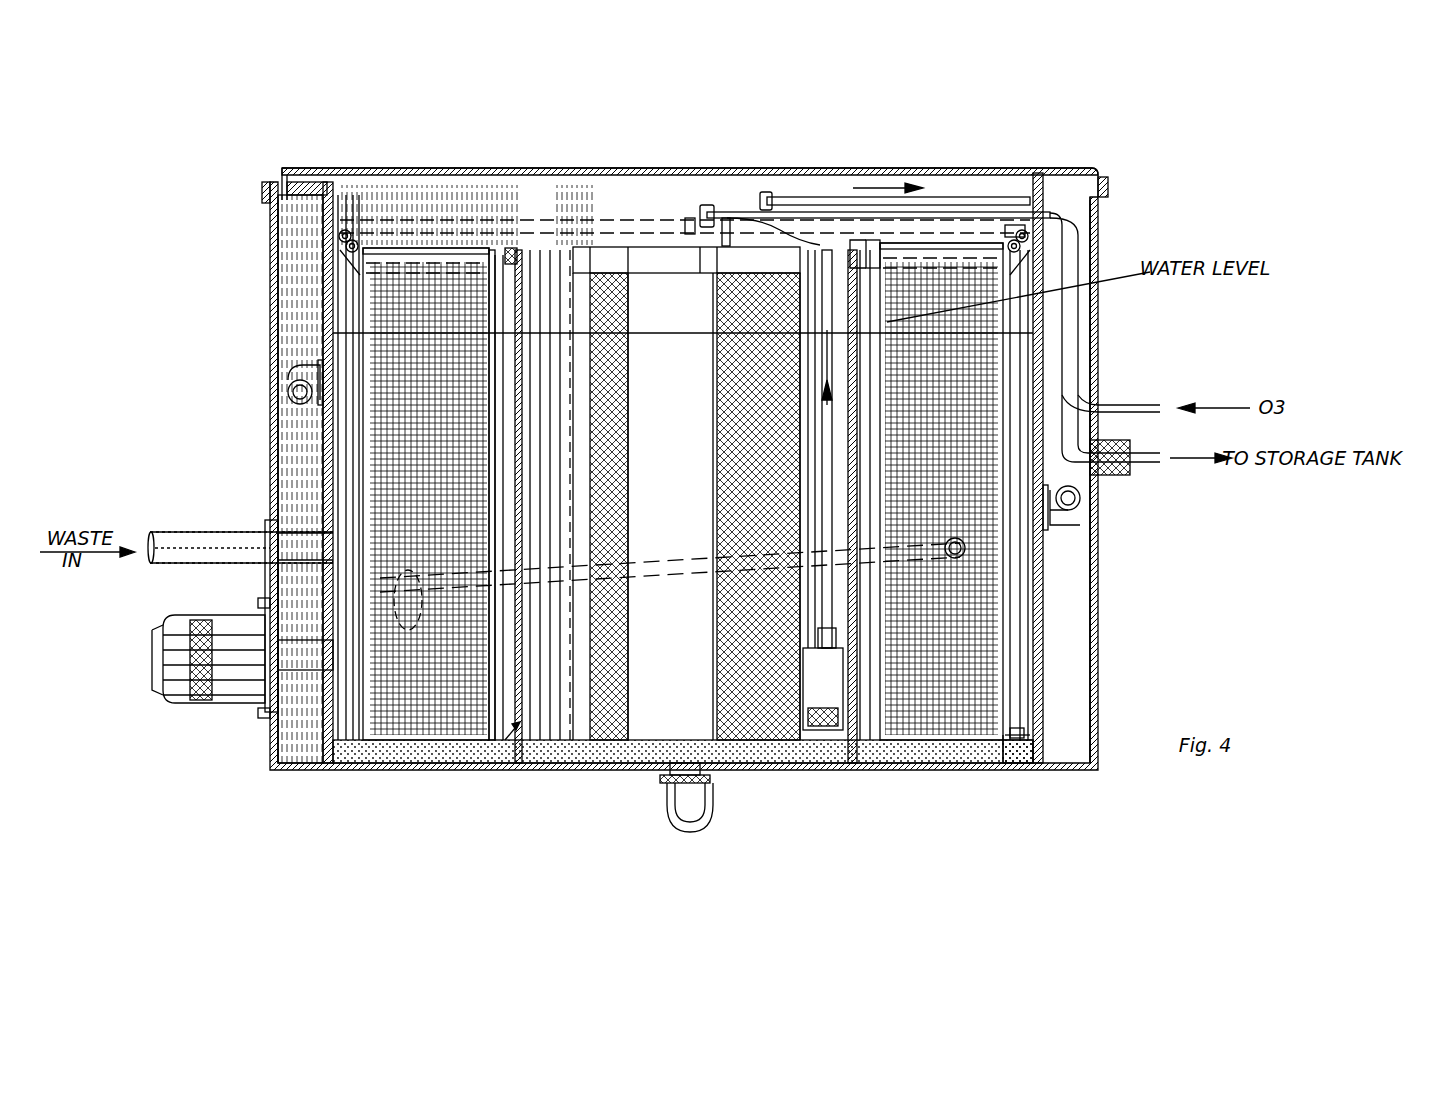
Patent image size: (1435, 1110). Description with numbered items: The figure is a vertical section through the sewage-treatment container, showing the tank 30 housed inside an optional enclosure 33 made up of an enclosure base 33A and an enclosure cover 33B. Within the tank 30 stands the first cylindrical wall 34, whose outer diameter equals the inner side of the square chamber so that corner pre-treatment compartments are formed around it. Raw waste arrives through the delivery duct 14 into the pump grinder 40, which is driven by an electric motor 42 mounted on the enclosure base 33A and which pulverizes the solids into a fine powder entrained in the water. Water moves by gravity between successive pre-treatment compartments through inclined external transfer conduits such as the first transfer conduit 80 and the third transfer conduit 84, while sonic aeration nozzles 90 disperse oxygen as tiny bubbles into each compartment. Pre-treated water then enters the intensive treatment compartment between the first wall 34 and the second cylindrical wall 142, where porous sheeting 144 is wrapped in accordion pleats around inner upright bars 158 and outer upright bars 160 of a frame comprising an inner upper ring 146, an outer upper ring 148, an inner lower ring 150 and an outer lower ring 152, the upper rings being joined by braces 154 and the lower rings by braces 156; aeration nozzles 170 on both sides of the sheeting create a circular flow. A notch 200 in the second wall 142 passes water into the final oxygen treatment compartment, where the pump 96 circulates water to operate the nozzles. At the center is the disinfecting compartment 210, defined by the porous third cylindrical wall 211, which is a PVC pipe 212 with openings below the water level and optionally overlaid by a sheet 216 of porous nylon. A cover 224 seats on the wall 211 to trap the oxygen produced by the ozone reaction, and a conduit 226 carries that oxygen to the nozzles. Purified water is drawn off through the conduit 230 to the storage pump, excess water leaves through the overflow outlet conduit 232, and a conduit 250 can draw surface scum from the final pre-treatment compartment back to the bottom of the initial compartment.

The delivery duct 14 is at (197, 532).
The tank 30 is at (323, 463).
The enclosure 33 is at (1108, 557).
The enclosure base 33A is at (1098, 258).
The enclosure cover 33B is at (1010, 168).
The first cylindrical wall 34 is at (330, 420).
The pump grinder 40 is at (265, 715).
The electric motor 42 is at (240, 693).
The first gravity-flow transfer conduit 80 is at (285, 378).
The third transfer conduit 84 is at (1080, 510).
The nozzles 90 is at (920, 245).
The pump 96 is at (825, 690).
The second cylindrical wall 142 is at (518, 460).
The porous sheeting 144 is at (375, 320).
The inner upper ring 146 is at (512, 258).
The outer upper ring 148 is at (340, 242).
The inner lower ring 150 is at (878, 765).
The outer lower ring 152 is at (1020, 752).
The braces 154 is at (390, 245).
The braces 156 is at (390, 755).
The inner upright bars 158 is at (465, 255).
The outer upright bars 160 is at (340, 760).
The sonic aeration nozzles 170 is at (1022, 730).
The notch 200 is at (500, 260).
The disinfecting compartment 210 is at (520, 760).
The third cylindrical wall 211 is at (630, 265).
The PVC pipe 212 is at (575, 270).
The sheet of porous nylon 216 is at (648, 710).
The cover 224 is at (605, 250).
The conduit 226 is at (815, 200).
The conduit 230 is at (717, 215).
The overflow outlet conduit 232 is at (708, 820).
The conduit 250 is at (682, 570).